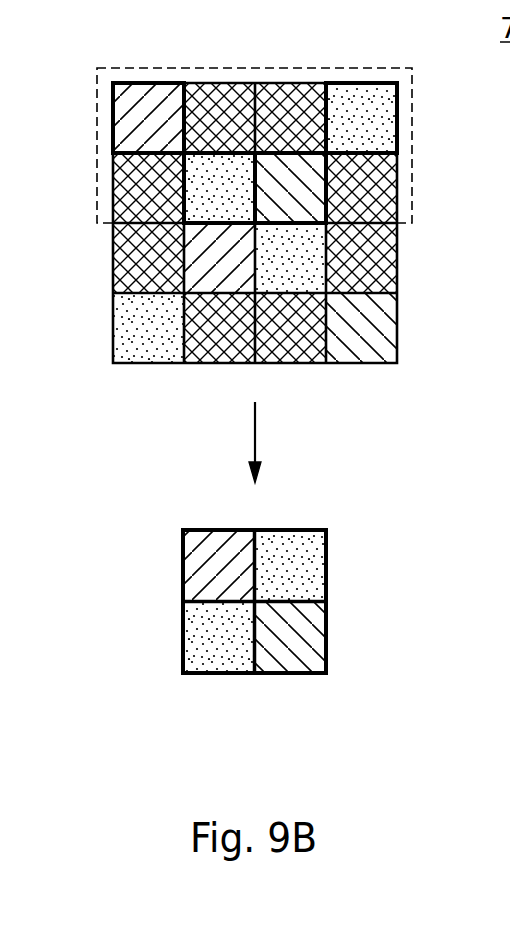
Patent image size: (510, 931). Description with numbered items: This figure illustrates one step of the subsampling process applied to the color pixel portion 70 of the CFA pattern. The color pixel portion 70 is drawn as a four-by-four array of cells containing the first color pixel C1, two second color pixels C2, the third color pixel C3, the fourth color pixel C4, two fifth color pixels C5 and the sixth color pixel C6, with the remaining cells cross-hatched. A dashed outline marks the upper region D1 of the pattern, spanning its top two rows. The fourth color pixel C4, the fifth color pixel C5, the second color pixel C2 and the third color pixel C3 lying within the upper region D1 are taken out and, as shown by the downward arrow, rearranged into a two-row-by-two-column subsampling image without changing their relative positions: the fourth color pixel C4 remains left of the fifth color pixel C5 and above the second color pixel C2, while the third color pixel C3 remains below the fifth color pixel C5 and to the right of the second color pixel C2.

The color pixel portion 70 is at (72, 42).
The upper region D1 is at (412, 137).
The first color pixel C1 is at (220, 258).
The second color pixel C2 is at (255, 223).
The third color pixel C3 is at (291, 188).
The fourth color pixel C4 is at (149, 118).
The fifth color pixel C5 is at (255, 223).
The sixth color pixel C6 is at (362, 328).